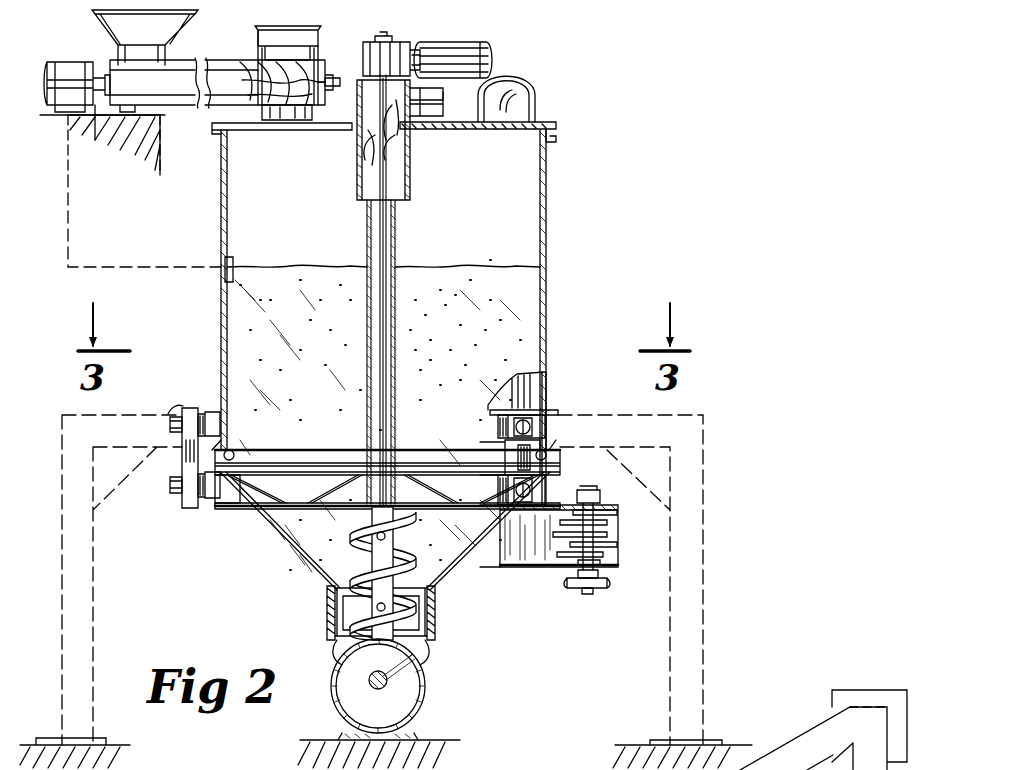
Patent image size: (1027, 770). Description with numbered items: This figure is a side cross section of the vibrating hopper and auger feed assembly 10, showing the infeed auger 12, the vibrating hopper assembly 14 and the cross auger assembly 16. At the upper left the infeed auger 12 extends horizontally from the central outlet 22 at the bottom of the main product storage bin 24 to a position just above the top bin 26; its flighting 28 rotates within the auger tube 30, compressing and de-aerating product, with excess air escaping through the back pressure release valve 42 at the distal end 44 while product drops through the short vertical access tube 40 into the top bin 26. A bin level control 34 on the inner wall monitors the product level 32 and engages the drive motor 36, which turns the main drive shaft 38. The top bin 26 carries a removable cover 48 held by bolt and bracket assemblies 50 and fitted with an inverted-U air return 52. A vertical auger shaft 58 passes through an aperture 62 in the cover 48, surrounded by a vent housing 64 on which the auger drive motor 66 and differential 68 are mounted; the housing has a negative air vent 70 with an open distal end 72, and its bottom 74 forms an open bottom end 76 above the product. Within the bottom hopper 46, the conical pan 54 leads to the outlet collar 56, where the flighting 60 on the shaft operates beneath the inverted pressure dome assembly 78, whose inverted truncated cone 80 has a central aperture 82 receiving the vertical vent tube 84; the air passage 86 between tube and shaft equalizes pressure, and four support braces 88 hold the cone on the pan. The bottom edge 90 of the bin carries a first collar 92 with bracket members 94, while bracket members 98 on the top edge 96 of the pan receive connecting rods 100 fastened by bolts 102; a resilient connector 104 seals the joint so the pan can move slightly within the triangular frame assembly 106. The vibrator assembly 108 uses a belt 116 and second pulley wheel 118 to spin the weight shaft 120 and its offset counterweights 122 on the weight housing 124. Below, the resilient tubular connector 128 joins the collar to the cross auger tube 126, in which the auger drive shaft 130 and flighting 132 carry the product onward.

The vibrating hopper and auger feed assembly 10 is at (630, 95).
The infeed auger 12 is at (155, 110).
The vibrating hopper assembly 14 is at (546, 245).
The cross auger assembly 16 is at (328, 672).
The central outlet 22 is at (117, 51).
The main product storage bin 24 is at (93, 20).
The top bin 26 is at (548, 271).
The flighting 28 is at (258, 62).
The auger tube 30 is at (220, 58).
The product level 32 is at (505, 264).
The bin level control 34 is at (236, 263).
The drive motor 36 is at (60, 60).
The main drive shaft 38 is at (285, 60).
The vertical access tube 40 is at (258, 108).
The back pressure release valve 42 is at (270, 42).
The distal end 44 is at (338, 78).
The bottom hopper 46 is at (300, 562).
The removable cover 48 is at (558, 121).
The bolt and bracket assemblies 50 is at (562, 141).
The air return 52 is at (534, 99).
The conical pan 54 is at (350, 548).
The outlet collar 56 is at (432, 617).
The auger shaft 58 is at (392, 172).
The flighting 60 is at (425, 602).
The aperture 62 is at (400, 143).
The vent housing 64 is at (352, 151).
The auger drive motor 66 is at (468, 42).
The differential 68 is at (404, 42).
The negative air vent 70 is at (420, 97).
The open distal end 72 is at (438, 109).
The bottom 74 is at (365, 197).
The open bottom end 76 is at (358, 223).
The inverted pressure dome assembly 78 is at (405, 462).
The inverted truncated cone 80 is at (360, 451).
The central aperture 82 is at (370, 450).
The vertical vent tube 84 is at (398, 251).
The air passage 86 is at (367, 191).
The support braces 88 is at (292, 522).
The bottom edge 90 is at (230, 453).
The first collar 92 is at (206, 410).
The bracket members 94 is at (186, 418).
The top edge 96 is at (243, 478).
The bracket members 98 is at (208, 506).
The connecting rod 100 is at (198, 506).
The bolt 102 is at (168, 432).
The resilient connector 104 is at (230, 455).
The triangular frame assembly 106 is at (706, 442).
The vibrator assembly 108 is at (548, 568).
The belt 116 is at (608, 585).
The second pulley wheel 118 is at (597, 588).
The weight shaft 120 is at (588, 596).
The offset counterweights 122 is at (604, 532).
The weight housing 124 is at (504, 568).
The cross auger tube 126 is at (424, 701).
The resilient tubular connector 128 is at (324, 623).
The auger drive shaft 130 is at (368, 685).
The flighting 132 is at (392, 678).